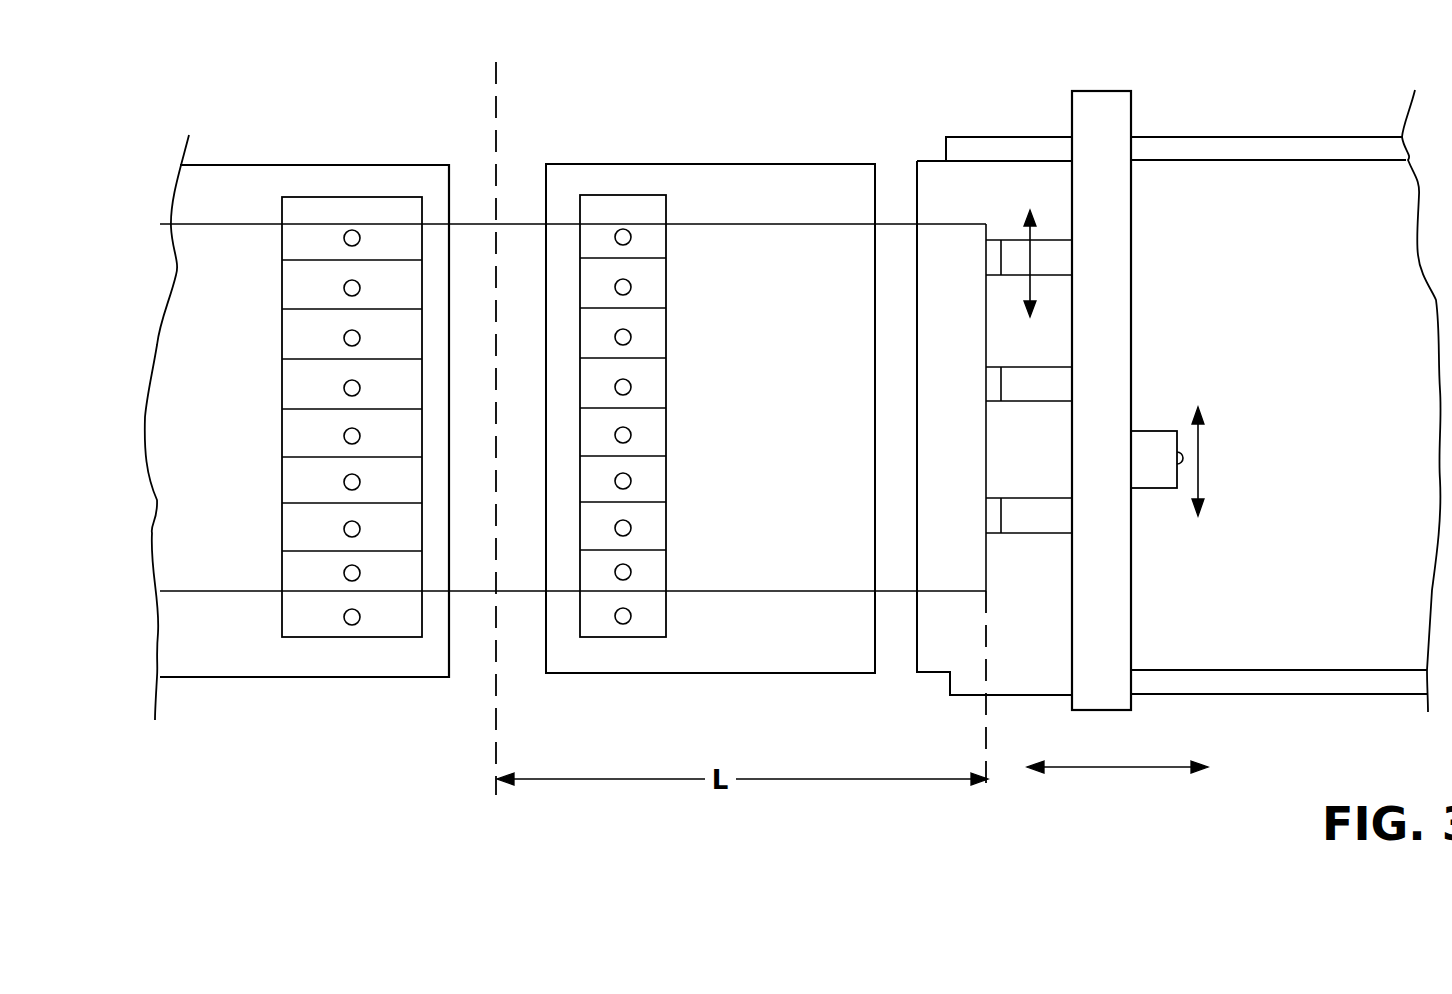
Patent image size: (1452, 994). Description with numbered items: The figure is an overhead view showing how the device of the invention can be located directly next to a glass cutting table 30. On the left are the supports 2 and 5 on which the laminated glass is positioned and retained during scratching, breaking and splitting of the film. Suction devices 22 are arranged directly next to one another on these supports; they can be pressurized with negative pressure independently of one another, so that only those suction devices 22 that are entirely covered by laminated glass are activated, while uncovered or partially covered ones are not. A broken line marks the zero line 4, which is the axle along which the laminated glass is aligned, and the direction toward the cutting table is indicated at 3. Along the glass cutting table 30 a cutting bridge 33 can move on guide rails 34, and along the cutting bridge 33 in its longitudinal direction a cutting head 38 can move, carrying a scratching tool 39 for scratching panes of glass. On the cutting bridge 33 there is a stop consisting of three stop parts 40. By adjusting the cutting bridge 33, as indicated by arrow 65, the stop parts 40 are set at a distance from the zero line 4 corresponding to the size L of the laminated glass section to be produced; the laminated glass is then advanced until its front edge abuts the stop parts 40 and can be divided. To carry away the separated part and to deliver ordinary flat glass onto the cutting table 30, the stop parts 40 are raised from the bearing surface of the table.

The support 2 is at (782, 187).
The conveying direction 3 is at (512, 162).
The zero line 4 is at (493, 702).
The support 5 is at (258, 655).
The suction device 22 is at (345, 212).
The glass cutting table 30 is at (1291, 112).
The cutting bridge 33 is at (1113, 236).
The guide rail 34 is at (1182, 150).
The cutting head 38 is at (1148, 475).
The scratching tool 39 is at (1204, 462).
The stop part 40 is at (1053, 258).
The arrow 65 is at (1103, 766).